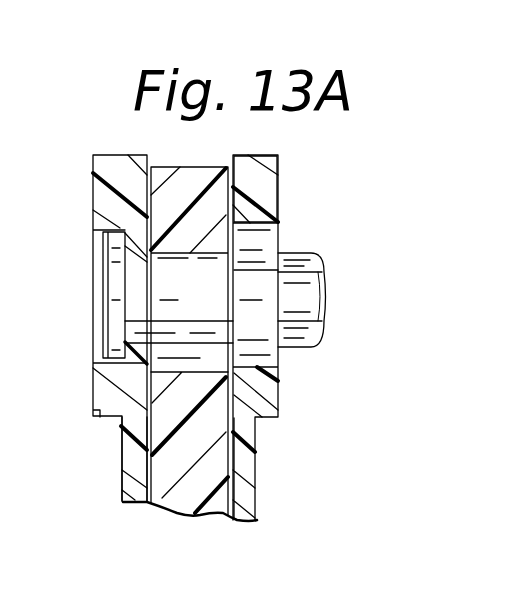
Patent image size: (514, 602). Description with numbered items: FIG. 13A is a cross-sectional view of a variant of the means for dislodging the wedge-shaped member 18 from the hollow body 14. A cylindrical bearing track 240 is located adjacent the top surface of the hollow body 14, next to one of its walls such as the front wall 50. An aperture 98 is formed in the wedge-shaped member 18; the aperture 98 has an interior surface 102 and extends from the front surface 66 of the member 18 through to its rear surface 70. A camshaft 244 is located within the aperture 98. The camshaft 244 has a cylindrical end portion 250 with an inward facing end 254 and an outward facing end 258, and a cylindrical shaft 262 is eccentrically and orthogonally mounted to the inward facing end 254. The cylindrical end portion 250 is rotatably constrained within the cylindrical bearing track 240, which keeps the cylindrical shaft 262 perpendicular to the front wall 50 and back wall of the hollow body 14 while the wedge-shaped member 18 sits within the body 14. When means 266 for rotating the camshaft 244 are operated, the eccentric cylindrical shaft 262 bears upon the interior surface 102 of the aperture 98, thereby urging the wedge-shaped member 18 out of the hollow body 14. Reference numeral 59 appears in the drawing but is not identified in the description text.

The cylindrical bearing track 240 is at (279, 210).
The outward facing end 258 is at (279, 231).
The cylindrical end portion 250 is at (257, 258).
The inward facing end 254 is at (280, 270).
The camshaft 244 is at (326, 297).
The means for rotating the camshaft 266 is at (314, 337).
The aperture 98 is at (165, 277).
The cylindrical shaft 262 is at (150, 329).
The rear surface 70 is at (142, 419).
The wall portion 59 is at (132, 469).
The hollow body 14 is at (123, 502).
The wedge-shaped member 18 is at (193, 486).
The interior surface 102 is at (212, 357).
The front surface 66 is at (233, 427).
The front wall 50 is at (235, 477).